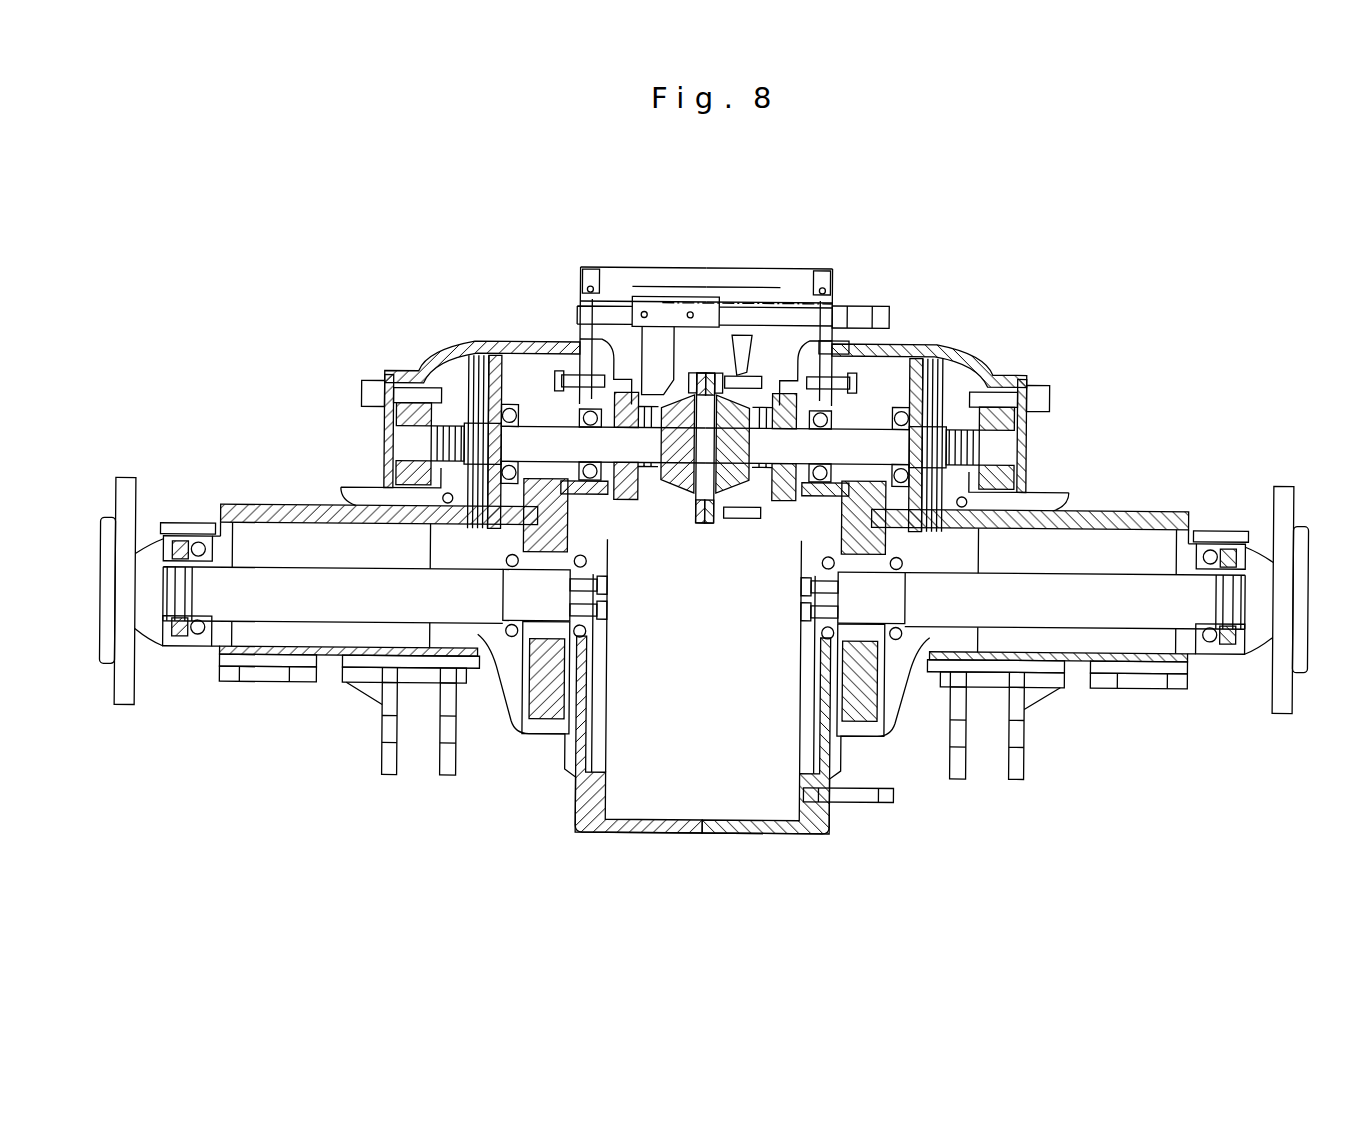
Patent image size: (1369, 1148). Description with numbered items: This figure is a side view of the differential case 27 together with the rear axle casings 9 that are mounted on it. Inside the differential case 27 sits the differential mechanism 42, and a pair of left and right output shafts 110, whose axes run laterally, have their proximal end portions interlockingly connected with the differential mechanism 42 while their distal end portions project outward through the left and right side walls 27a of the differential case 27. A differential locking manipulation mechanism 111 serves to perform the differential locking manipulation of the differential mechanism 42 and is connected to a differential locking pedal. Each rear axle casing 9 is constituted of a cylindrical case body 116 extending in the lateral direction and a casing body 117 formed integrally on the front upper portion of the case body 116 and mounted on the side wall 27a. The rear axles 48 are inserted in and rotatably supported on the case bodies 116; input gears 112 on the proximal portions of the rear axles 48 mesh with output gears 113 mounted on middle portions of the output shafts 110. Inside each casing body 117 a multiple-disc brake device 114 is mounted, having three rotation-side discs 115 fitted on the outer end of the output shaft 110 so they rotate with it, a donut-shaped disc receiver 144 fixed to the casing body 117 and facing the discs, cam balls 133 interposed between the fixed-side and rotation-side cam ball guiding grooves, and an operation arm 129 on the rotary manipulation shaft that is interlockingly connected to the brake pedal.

The rear axle casing 9 is at (375, 348).
The differential case 27 is at (766, 253).
The side wall of the differential case 27a is at (553, 350).
The differential mechanism 42 is at (708, 546).
The rear axle 48 is at (307, 600).
The output shaft 110 is at (655, 450).
The differential locking manipulation mechanism 111 is at (684, 352).
The input gear 112 is at (547, 703).
The output gear 113 is at (548, 355).
The multiple-disc brake device 114 is at (514, 377).
The rotation-side disc 115 is at (437, 386).
The case body 116 is at (258, 508).
The casing body 117 is at (462, 365).
The operation arm 129 is at (383, 438).
The cam ball 133 is at (445, 500).
The disc receiver 144 is at (482, 360).